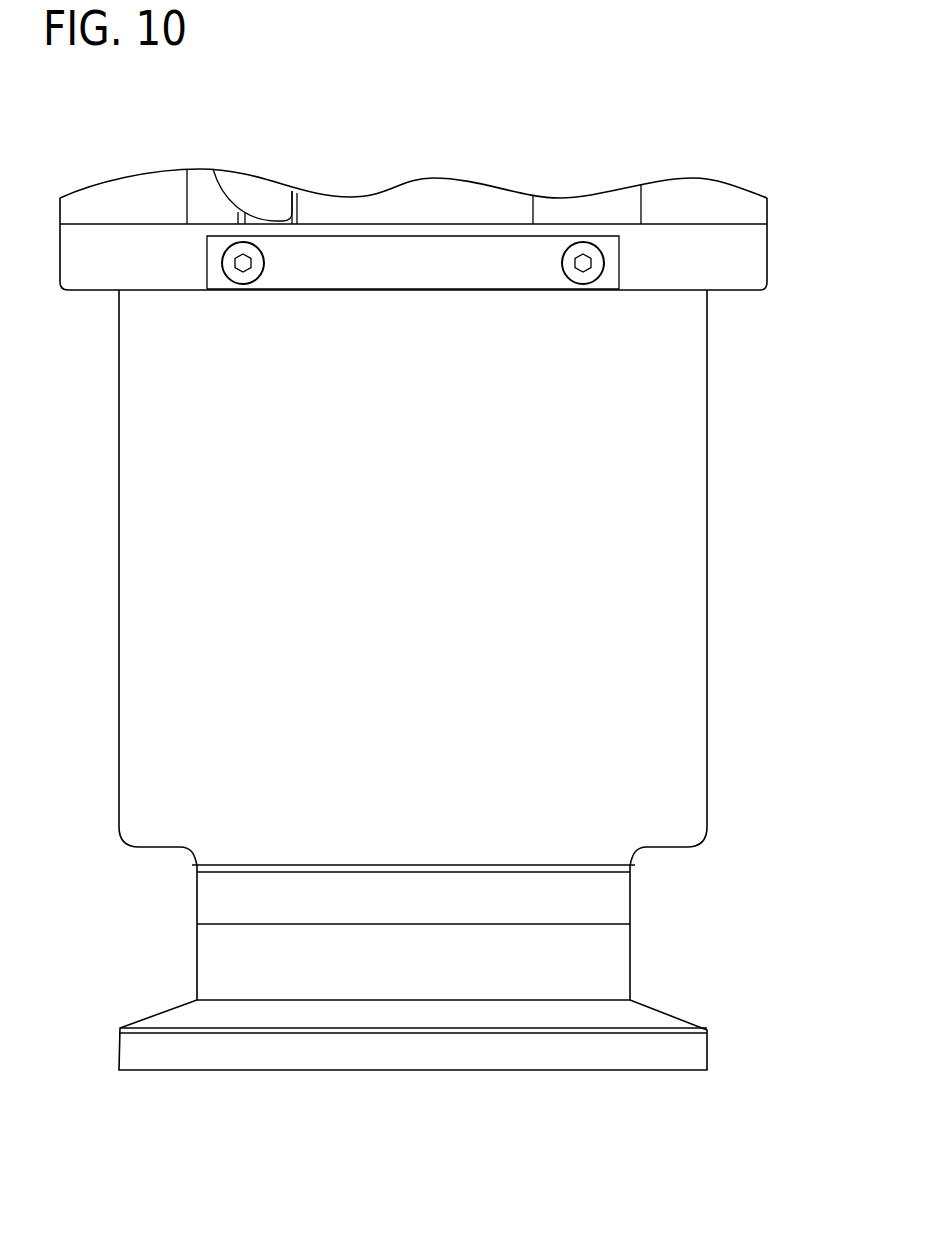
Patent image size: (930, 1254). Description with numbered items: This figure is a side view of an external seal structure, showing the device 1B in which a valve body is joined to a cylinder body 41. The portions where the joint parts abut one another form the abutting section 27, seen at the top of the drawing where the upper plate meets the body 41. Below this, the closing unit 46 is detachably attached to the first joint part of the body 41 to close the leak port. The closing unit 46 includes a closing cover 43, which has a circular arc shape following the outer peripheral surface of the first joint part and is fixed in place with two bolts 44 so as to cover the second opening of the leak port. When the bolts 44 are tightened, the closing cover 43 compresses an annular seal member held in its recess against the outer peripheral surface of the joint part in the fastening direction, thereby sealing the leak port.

The gas supply apparatus 1B is at (769, 118).
The abutting section 27 is at (771, 223).
The container body 41 is at (707, 452).
The closing cover 43 is at (479, 278).
The bolts 44 is at (231, 278).
The closing unit 46 is at (283, 292).